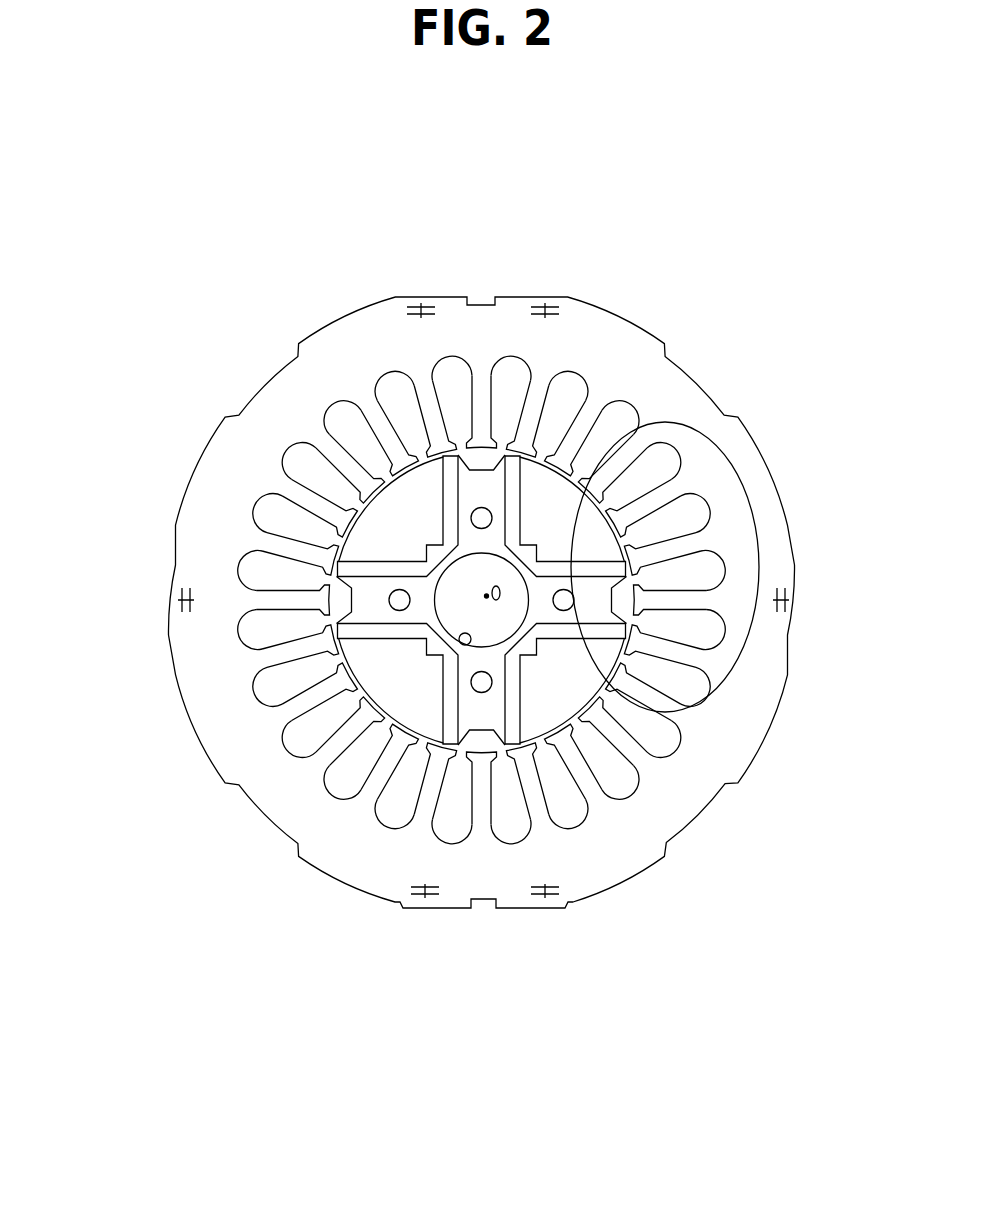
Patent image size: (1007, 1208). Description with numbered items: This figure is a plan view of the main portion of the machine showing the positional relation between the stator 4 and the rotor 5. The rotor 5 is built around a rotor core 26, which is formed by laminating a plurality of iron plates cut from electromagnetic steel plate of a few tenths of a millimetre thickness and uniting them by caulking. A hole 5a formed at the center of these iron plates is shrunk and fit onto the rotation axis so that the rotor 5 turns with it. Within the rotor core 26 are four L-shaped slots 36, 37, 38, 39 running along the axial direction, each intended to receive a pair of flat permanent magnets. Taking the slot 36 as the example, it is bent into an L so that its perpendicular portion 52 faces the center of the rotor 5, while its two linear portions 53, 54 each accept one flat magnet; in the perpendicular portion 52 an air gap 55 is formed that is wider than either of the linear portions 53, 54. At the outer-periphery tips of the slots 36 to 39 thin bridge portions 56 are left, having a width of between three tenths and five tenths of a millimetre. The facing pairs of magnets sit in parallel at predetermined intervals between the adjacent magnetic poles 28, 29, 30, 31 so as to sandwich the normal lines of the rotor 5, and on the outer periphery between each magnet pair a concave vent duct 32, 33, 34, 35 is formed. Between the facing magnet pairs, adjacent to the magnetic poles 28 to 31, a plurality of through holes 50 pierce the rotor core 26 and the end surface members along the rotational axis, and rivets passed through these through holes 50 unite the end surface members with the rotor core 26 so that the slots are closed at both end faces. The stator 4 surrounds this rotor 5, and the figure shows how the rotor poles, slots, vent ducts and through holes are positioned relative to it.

The stator 4 is at (615, 315).
The rotor 5 is at (477, 597).
The hole 5a is at (466, 643).
The rotor core 26 is at (565, 677).
The magnetic pole 28 is at (527, 534).
The magnetic pole 29 is at (386, 521).
The magnetic pole 30 is at (384, 702).
The magnetic pole 31 is at (527, 728).
The concave vent duct 32 is at (482, 445).
The concave vent duct 33 is at (327, 597).
The concave vent duct 34 is at (484, 748).
The concave vent duct 35 is at (620, 598).
The L-shaped slot 36 is at (440, 505).
The L-shaped slot 37 is at (400, 603).
The L-shaped slot 38 is at (527, 678).
The L-shaped slot 39 is at (597, 560).
The through hole 50 is at (352, 672).
The perpendicular portion 52 is at (482, 600).
The linear portion 53 is at (433, 550).
The linear portion 54 is at (387, 580).
The air gap 55 is at (345, 535).
The bridge portion 56 is at (461, 437).